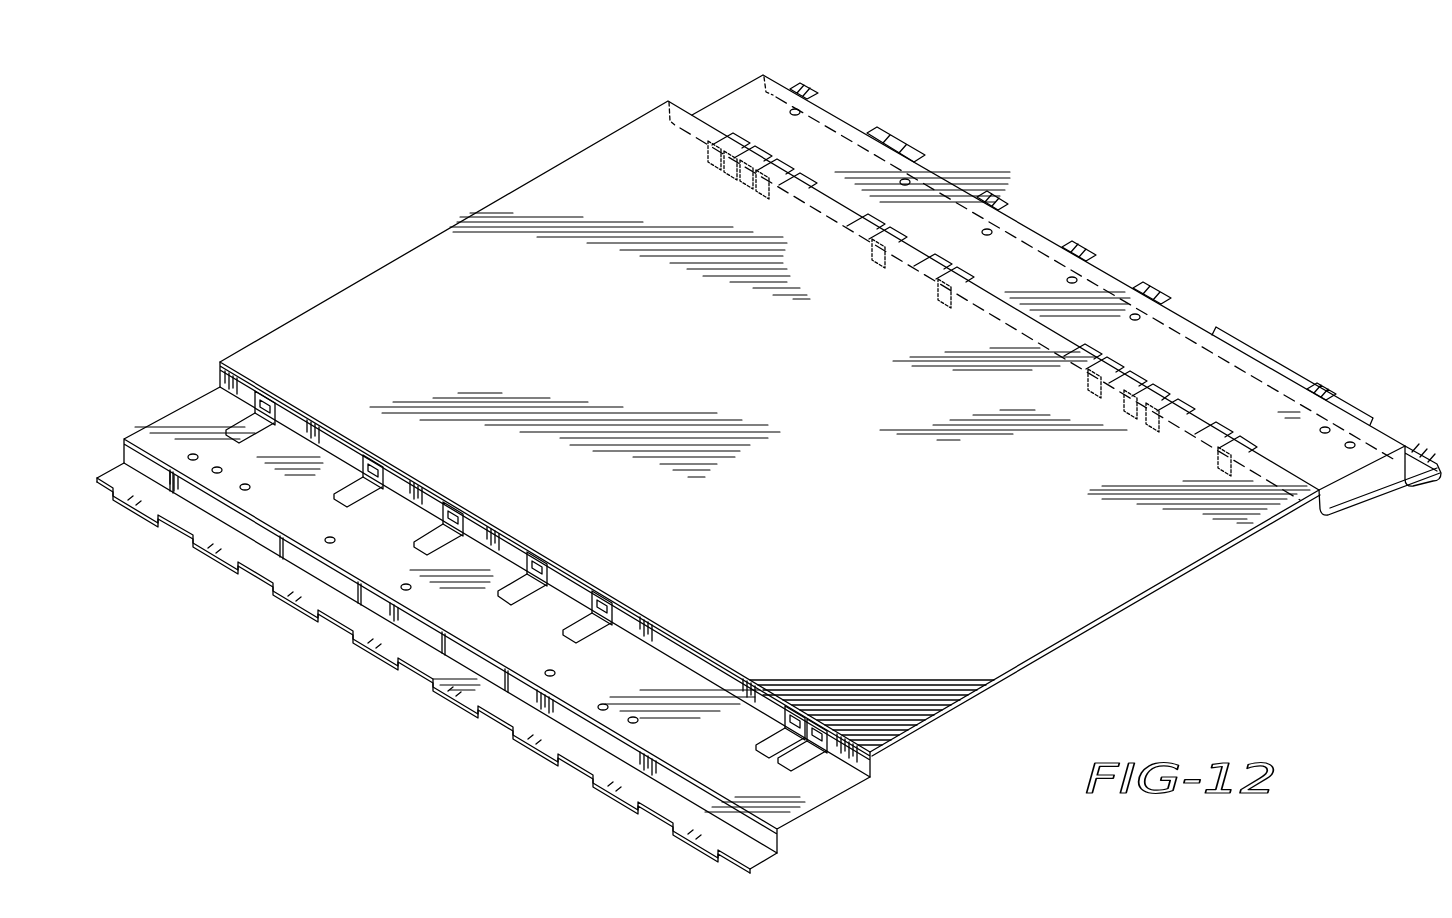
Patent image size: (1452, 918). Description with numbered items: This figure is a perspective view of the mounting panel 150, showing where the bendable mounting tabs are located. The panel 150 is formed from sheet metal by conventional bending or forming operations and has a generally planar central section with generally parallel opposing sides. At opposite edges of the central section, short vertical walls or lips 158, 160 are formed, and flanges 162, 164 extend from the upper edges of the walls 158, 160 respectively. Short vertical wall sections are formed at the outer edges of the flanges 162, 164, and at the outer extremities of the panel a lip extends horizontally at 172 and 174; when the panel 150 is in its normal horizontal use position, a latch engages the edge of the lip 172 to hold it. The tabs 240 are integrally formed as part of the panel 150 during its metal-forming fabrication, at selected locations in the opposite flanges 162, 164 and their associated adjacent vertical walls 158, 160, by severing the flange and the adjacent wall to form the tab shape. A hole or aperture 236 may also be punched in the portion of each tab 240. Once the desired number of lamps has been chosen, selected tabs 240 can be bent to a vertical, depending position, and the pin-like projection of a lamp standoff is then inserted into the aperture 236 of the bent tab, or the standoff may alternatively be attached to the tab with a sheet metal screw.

The mounting panel 150 is at (835, 484).
The short vertical wall 158 is at (1315, 503).
The short vertical wall 160 is at (870, 770).
The flange 162 is at (730, 107).
The flange 164 is at (178, 420).
The lip 172 is at (1432, 455).
The lip 174 is at (433, 670).
The aperture 236 is at (822, 728).
The tab 240 is at (812, 752).